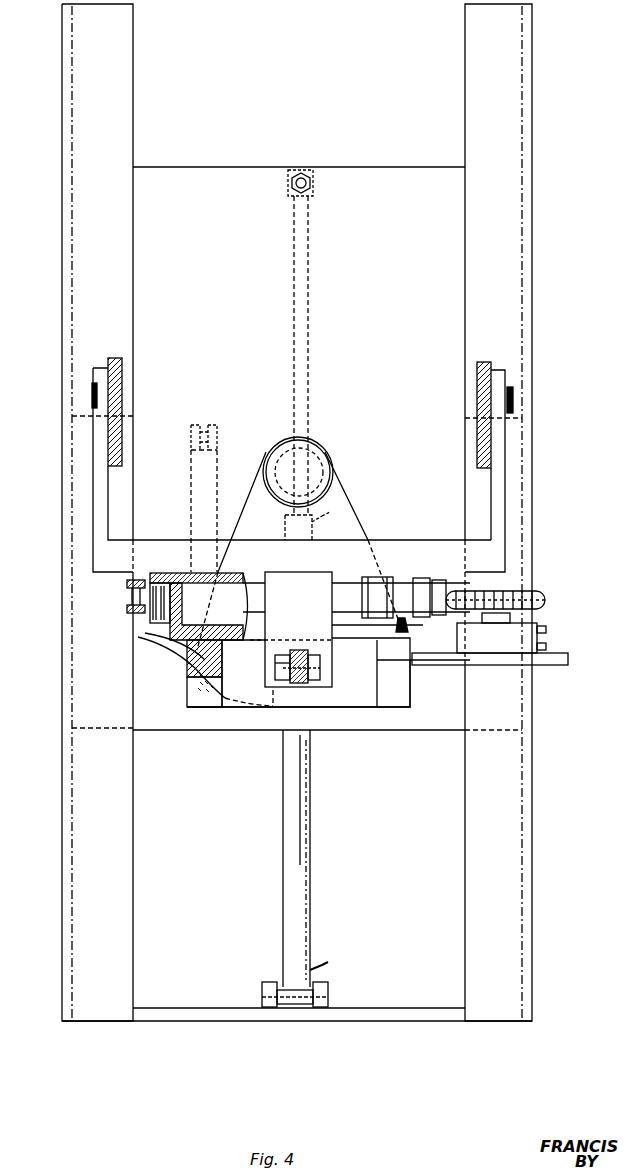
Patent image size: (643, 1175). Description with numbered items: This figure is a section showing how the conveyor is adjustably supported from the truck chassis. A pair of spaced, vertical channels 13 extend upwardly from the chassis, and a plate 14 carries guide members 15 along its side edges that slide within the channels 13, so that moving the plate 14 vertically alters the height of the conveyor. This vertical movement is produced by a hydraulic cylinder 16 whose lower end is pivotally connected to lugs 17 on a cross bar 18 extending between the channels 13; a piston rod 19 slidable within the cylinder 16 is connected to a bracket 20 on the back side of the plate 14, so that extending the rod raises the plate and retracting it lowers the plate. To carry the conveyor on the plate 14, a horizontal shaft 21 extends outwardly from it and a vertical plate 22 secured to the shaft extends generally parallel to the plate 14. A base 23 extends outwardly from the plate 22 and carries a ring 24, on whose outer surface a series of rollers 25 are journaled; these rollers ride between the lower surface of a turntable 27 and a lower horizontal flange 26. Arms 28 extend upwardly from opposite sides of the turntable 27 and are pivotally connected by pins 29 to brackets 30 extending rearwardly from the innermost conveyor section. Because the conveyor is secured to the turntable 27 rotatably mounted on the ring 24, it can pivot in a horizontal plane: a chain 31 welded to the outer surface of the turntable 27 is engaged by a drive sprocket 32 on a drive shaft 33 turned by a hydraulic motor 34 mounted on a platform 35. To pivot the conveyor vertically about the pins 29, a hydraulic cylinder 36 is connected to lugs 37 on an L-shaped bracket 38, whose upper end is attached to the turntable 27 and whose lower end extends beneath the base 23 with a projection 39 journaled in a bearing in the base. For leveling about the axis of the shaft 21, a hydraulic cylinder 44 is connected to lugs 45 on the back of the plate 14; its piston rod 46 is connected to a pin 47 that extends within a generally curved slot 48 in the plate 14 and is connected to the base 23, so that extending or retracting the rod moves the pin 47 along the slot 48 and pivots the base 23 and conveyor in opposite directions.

The vertical channels 13 is at (134, 61).
The plate 14 is at (372, 152).
The guide members 15 is at (80, 660).
The hydraulic cylinder 16 is at (290, 835).
The lugs 17 is at (318, 1005).
The cross bar 18 is at (228, 1012).
The piston rod 19 is at (294, 307).
The bracket 20 is at (290, 176).
The horizontal shaft 21 is at (328, 458).
The vertical plate 22 is at (346, 512).
The base 23 is at (405, 695).
The ring 24 is at (170, 632).
The rollers 25 is at (135, 598).
The lower horizontal flange 26 is at (150, 612).
The turntable 27 is at (157, 573).
The arms 28 is at (95, 510).
The pins 29 is at (92, 394).
The brackets 30 is at (118, 372).
The chain 31 is at (400, 582).
The drive sprocket 32 is at (540, 594).
The drive shaft 33 is at (520, 614).
The hydraulic motor 34 is at (546, 633).
The platform 35 is at (568, 660).
The hydraulic cylinder 36 is at (300, 688).
The lugs 37 is at (297, 650).
The L-shaped bracket 38 is at (335, 650).
The projection 39 is at (275, 663).
The hydraulic cylinder 44 is at (191, 490).
The lugs 45 is at (213, 425).
The piston rod 46 is at (190, 670).
The pin 47 is at (188, 700).
The curved slot 48 is at (152, 655).